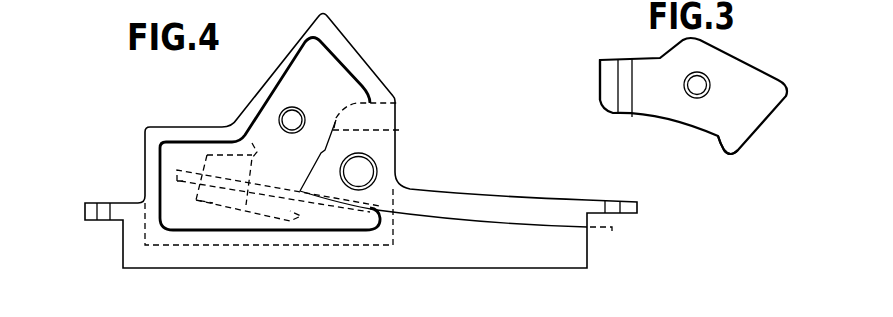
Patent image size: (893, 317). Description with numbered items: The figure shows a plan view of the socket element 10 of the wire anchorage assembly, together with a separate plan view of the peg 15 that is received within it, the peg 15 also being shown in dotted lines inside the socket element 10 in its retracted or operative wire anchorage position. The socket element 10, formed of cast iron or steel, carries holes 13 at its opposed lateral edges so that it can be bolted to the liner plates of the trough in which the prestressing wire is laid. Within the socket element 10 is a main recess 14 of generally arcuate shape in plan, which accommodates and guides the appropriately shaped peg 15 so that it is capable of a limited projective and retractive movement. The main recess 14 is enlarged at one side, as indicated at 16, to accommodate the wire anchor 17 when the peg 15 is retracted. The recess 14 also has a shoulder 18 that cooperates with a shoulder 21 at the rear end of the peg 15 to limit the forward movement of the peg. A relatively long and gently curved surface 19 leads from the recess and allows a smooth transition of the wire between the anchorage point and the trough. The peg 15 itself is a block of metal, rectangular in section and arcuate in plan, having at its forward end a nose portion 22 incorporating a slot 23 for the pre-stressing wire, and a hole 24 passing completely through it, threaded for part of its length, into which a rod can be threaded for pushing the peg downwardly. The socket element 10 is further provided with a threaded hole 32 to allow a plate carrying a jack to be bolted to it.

In FIG. 4, the socket element 10 is at (356, 52).
In FIG. 4, the holes 13 is at (104, 203).
In FIG. 4, the main recess 14 is at (357, 87).
In FIG. 4, the peg 15 is at (400, 130).
In FIG. 3, the peg 15 is at (745, 65).
In FIG. 4, the enlargement or extension of the main recess 16 is at (173, 152).
In FIG. 4, the wire anchor 17 is at (213, 203).
In FIG. 4, the shoulder 18 is at (318, 155).
In FIG. 4, the gently curved surface 19 is at (445, 218).
In FIG. 4, the shoulder 21 is at (400, 103).
In FIG. 3, the shoulder 21 is at (721, 157).
In FIG. 4, the nose portion 22 is at (301, 218).
In FIG. 3, the nose portion 22 is at (642, 58).
In FIG. 4, the slot 23 is at (280, 188).
In FIG. 3, the slot 23 is at (618, 81).
In FIG. 4, the hole 24 is at (299, 108).
In FIG. 3, the hole 24 is at (691, 98).
In FIG. 4, the threaded hole 32 is at (377, 170).